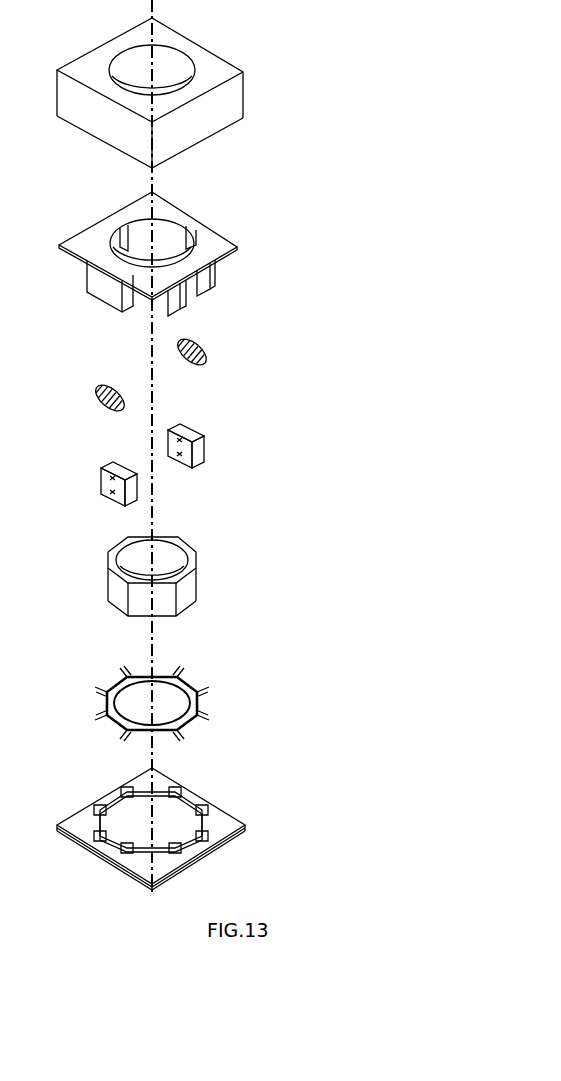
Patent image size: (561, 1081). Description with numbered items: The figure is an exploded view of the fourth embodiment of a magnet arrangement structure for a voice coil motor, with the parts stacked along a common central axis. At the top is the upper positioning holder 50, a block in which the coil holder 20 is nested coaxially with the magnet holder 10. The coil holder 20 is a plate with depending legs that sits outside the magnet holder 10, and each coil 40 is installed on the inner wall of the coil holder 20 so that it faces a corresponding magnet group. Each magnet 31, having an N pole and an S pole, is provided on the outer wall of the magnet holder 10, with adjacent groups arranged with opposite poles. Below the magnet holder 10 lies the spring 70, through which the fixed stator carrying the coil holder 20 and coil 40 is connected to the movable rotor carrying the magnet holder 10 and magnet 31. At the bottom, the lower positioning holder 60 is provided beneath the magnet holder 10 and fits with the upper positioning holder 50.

The upper positioning holder 50 is at (257, 93).
The coil holder 20 is at (257, 250).
The coil 40 is at (220, 352).
The magnet 31 is at (230, 440).
The magnet holder 10 is at (220, 555).
The spring 70 is at (230, 700).
The lower positioning holder 60 is at (250, 815).